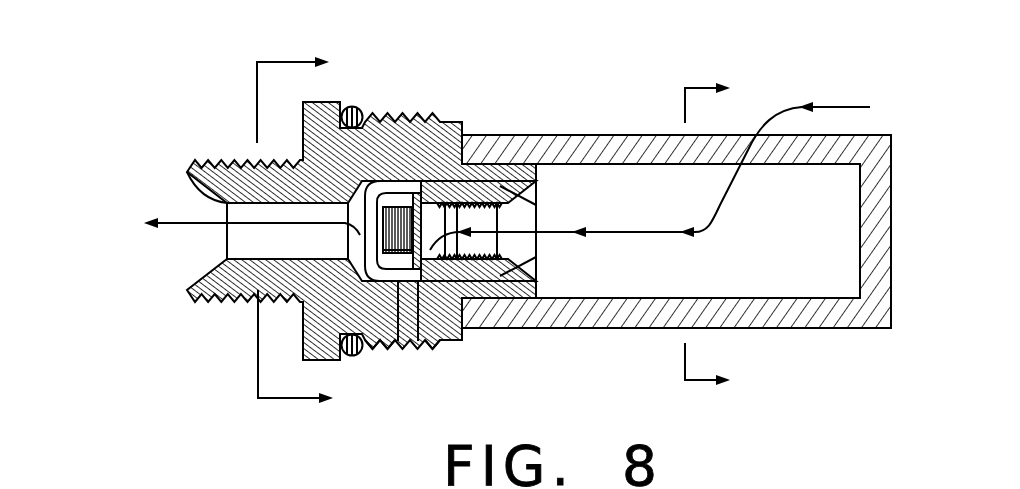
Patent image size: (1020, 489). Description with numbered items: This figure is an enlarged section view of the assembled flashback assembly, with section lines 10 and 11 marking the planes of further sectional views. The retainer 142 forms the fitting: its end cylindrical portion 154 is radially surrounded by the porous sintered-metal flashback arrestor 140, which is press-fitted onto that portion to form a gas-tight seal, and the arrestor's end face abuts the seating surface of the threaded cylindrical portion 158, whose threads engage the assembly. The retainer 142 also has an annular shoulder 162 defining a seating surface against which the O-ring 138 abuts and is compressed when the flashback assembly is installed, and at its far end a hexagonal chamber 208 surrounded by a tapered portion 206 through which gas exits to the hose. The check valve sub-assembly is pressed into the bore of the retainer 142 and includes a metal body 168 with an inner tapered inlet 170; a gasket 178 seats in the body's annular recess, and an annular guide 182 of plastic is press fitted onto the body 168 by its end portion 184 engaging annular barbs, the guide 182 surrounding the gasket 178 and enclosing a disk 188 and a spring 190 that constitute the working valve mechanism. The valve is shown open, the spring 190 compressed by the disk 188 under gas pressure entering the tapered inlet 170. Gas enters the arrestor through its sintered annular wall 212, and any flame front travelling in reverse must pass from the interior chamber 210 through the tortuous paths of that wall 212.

The section line 10- 10 is at (313, 229).
The section line 11- 11 is at (726, 236).
The O-ring 138 is at (362, 108).
The flashback arrestor 140 is at (640, 82).
The retainer 142 is at (217, 108).
The end cylindrical portion 154 is at (515, 197).
The threaded cylindrical portion 158 is at (398, 180).
The annular shoulder 162 is at (302, 102).
The body 168 is at (533, 310).
The inner tapered inlet 170 is at (545, 205).
The gasket 178 is at (467, 335).
The annular guide 182 is at (432, 180).
The end portion 184 is at (515, 327).
The disk 188 is at (420, 349).
The spring 190 is at (397, 350).
The tapered portion 206 is at (205, 178).
The hexagonal chamber 208 is at (252, 257).
The interior chamber 210 is at (823, 254).
The annular wall 212 is at (648, 140).